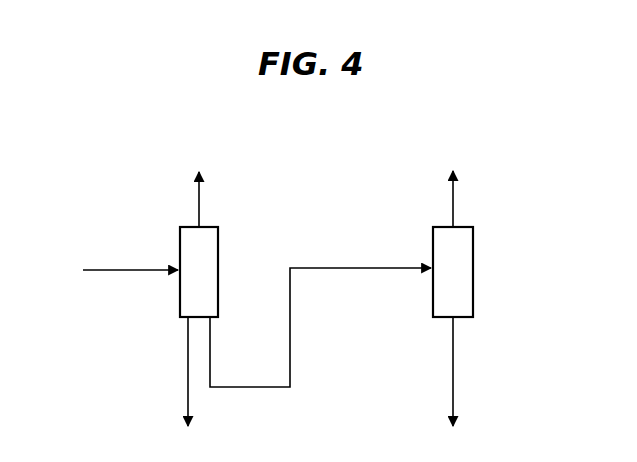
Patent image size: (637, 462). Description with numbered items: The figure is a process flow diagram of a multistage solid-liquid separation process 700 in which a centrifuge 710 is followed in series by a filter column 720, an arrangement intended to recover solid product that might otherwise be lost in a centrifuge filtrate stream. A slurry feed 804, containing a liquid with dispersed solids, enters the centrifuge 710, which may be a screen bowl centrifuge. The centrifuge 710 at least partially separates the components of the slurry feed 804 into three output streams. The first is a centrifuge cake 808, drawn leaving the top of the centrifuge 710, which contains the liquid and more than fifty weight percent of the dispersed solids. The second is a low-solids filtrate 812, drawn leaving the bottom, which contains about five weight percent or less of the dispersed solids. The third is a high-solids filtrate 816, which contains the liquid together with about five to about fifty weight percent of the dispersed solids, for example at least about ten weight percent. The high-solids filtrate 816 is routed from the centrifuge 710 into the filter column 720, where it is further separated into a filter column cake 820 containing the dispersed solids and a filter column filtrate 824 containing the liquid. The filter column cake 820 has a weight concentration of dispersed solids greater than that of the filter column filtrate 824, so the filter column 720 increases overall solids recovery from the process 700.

The multistage solid-liquid separation process 700 is at (378, 146).
The centrifuge 710 is at (218, 257).
The filter column 720 is at (473, 257).
The slurry feed 804 is at (121, 266).
The centrifuge cake 808 is at (199, 202).
The low-solids filtrate 812 is at (188, 350).
The high-solids filtrate 816 is at (246, 386).
The filter column cake 820 is at (453, 202).
The filter column filtrate 824 is at (453, 400).